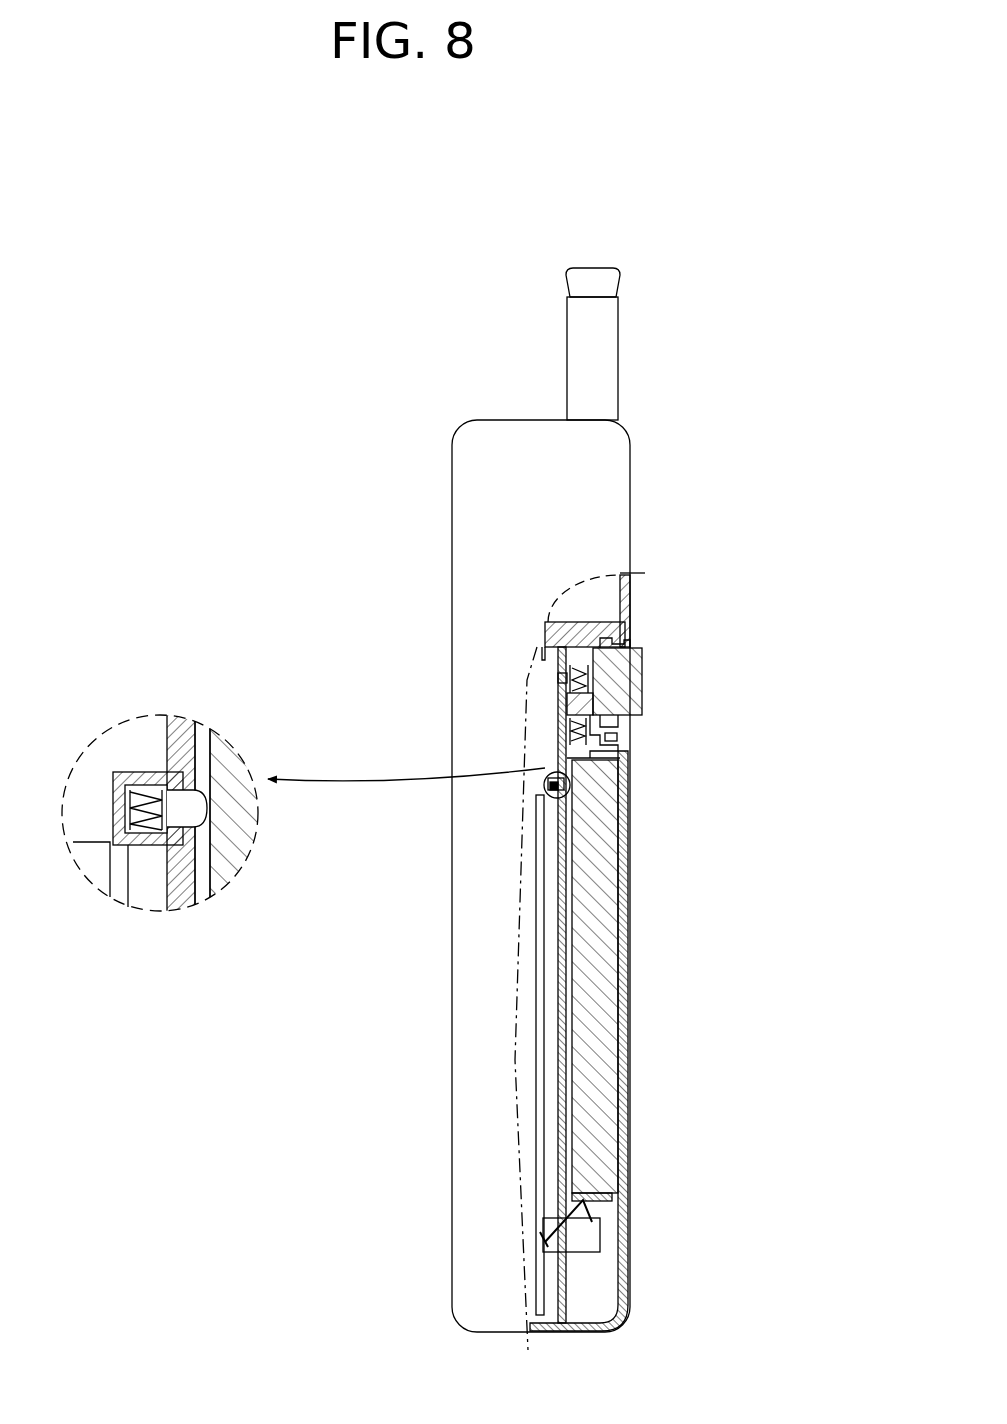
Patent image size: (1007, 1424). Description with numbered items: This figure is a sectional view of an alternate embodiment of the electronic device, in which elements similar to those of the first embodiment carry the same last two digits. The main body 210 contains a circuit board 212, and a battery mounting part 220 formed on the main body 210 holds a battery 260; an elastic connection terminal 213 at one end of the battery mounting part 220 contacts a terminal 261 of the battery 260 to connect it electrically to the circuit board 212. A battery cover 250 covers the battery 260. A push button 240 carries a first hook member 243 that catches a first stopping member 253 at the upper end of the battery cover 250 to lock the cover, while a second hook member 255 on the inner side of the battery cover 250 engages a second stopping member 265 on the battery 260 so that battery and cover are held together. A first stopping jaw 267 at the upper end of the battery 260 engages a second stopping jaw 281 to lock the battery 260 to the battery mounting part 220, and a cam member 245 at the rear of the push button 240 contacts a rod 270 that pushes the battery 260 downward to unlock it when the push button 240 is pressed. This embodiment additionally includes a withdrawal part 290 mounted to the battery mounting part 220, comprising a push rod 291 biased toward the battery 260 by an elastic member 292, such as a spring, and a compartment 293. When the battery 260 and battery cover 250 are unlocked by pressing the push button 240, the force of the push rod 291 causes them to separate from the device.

The main body 210 is at (437, 495).
The circuit board 212 is at (537, 1002).
The elastic connection terminal 213 is at (600, 1212).
The battery mounting part 220 is at (566, 855).
The push button 240 is at (643, 672).
The first hook member 243 is at (627, 727).
The cam member 245 is at (568, 696).
The battery cover 250 is at (628, 1002).
The first stopping member 253 is at (645, 712).
The second hook member 255 is at (625, 748).
The battery 260 is at (595, 921).
The terminal 261 is at (613, 1196).
The second stopping member 265 is at (622, 758).
The first stopping jaw 267 is at (560, 778).
The rod 270 is at (568, 747).
The second stopping jaw 281 is at (560, 753).
The withdrawal part 290 is at (158, 757).
The push rod 291 is at (203, 810).
The elastic member 292 is at (140, 782).
The compartment 293 is at (128, 857).